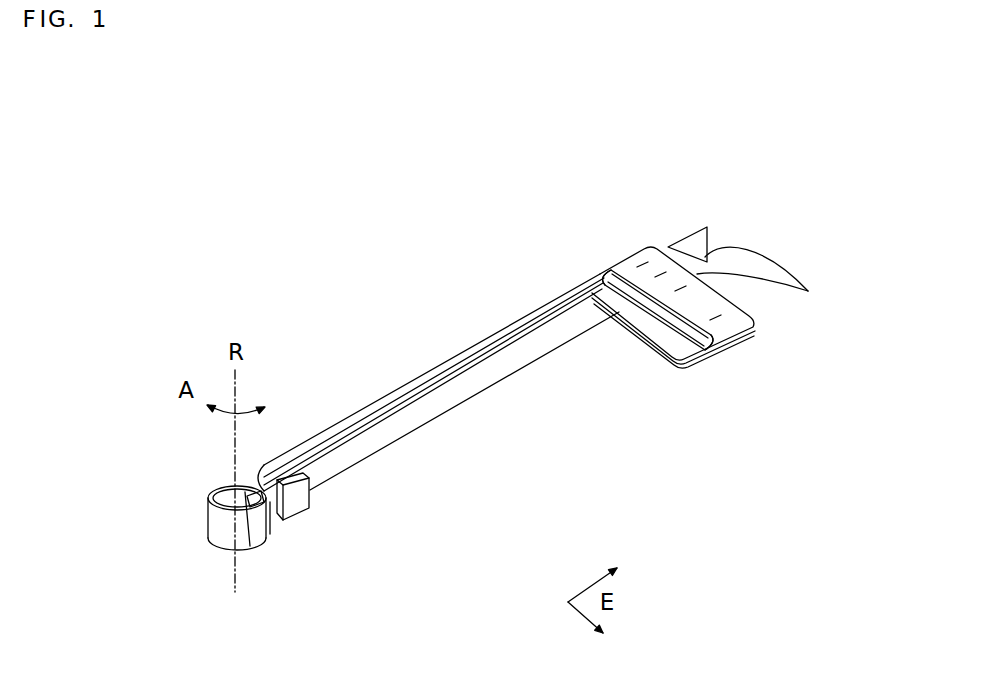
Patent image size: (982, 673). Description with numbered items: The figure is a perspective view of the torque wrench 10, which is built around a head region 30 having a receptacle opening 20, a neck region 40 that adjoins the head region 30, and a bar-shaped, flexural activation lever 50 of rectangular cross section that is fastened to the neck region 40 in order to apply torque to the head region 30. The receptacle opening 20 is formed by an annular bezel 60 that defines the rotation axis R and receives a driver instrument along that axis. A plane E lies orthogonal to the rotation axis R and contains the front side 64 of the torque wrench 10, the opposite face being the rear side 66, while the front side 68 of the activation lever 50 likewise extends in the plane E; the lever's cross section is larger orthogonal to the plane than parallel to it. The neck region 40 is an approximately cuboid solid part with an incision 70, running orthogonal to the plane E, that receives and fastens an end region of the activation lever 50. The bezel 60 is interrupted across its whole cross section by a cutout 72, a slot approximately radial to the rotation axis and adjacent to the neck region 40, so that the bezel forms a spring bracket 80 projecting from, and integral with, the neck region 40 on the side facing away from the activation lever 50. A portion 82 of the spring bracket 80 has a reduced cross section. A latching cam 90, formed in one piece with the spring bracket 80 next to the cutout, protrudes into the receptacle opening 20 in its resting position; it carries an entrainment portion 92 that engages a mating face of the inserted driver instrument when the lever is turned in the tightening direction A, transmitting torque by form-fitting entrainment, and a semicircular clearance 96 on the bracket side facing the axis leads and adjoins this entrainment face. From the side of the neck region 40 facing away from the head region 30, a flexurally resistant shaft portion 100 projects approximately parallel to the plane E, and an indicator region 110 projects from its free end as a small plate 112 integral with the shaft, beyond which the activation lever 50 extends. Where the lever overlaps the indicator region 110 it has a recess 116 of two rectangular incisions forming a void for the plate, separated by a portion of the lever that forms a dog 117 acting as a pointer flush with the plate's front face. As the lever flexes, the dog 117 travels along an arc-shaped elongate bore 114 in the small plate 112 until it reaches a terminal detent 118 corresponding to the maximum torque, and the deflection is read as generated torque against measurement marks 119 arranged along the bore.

The torque wrench 10 is at (308, 262).
The receptacle opening 20 is at (213, 503).
The head region 30 is at (207, 482).
The neck region 40 is at (303, 527).
The activation lever 50 is at (477, 385).
The annular bezel 60 is at (214, 466).
The front side 64 is at (364, 412).
The rear side 66 is at (420, 437).
The front side of the activation lever 68 is at (493, 348).
The incision 70 is at (280, 470).
The cutout 72 is at (282, 537).
The spring bracket 80 is at (214, 497).
The portion of the spring bracket 82 is at (220, 533).
The latching cam 90 is at (244, 496).
The entrainment portion 92 is at (244, 546).
The semicircular clearance 96 is at (244, 546).
The shaft portion 100 is at (527, 303).
The indicator region 110 is at (632, 243).
The small plate 112 is at (752, 330).
The elongate bore 114 is at (668, 323).
The recess 116 is at (594, 292).
The dog 117 is at (621, 288).
The terminal detent 118 is at (704, 347).
The measurement marks 119 is at (767, 285).